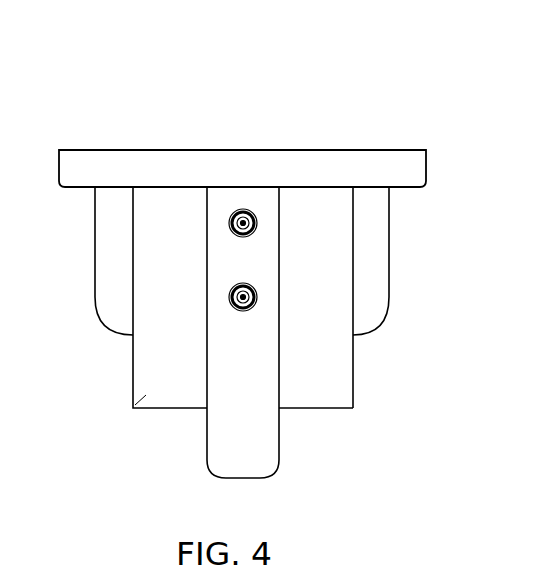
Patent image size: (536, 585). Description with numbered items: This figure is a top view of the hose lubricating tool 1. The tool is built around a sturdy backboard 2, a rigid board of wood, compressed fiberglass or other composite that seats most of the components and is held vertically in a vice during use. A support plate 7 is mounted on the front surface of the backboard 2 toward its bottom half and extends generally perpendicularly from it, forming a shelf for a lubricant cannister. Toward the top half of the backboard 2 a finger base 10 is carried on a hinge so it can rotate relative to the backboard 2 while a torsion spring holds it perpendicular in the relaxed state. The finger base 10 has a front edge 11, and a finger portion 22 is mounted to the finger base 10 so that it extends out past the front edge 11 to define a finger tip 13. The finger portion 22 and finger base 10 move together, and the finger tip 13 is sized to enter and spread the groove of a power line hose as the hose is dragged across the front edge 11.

The hose lubricating tool 1 is at (412, 166).
The backboard 2 is at (298, 168).
The support plate 7 is at (375, 287).
The finger base 10 is at (338, 392).
The front edge 11 is at (158, 409).
The finger tip 13 is at (257, 467).
The finger portion 22 is at (248, 385).